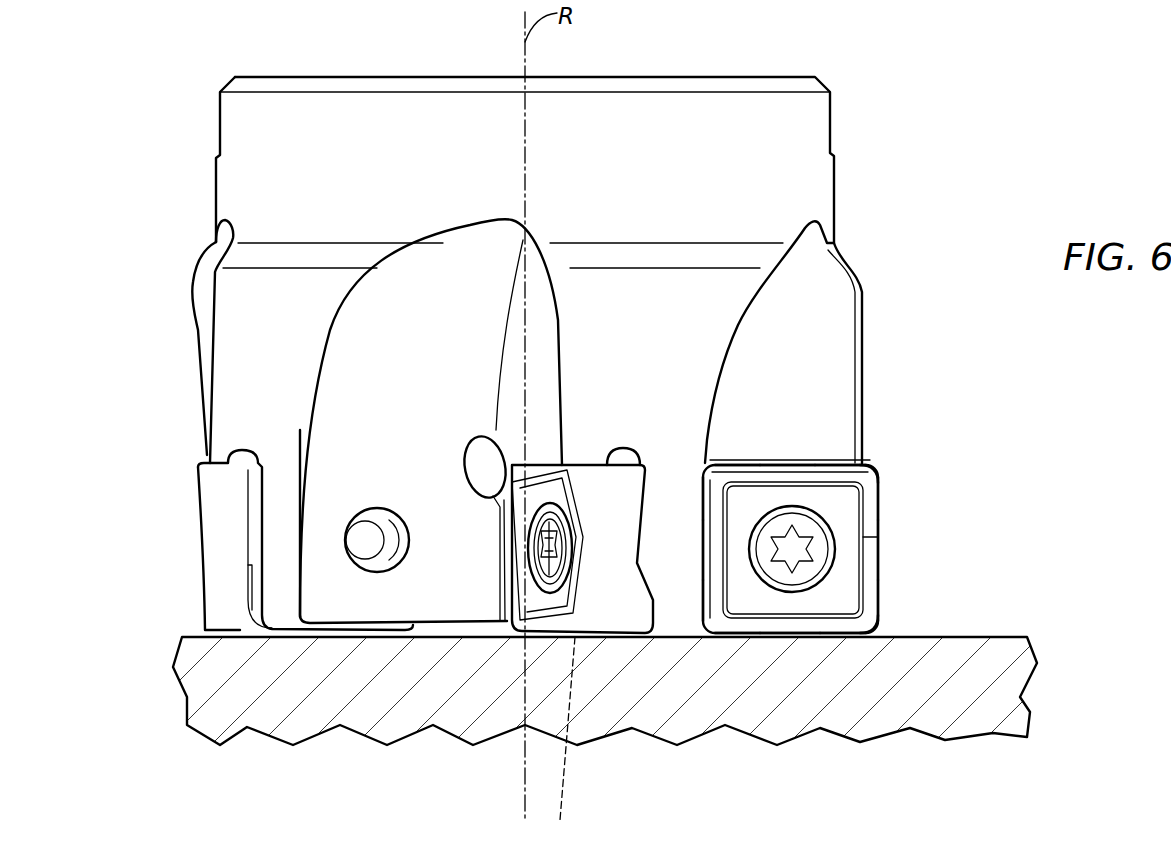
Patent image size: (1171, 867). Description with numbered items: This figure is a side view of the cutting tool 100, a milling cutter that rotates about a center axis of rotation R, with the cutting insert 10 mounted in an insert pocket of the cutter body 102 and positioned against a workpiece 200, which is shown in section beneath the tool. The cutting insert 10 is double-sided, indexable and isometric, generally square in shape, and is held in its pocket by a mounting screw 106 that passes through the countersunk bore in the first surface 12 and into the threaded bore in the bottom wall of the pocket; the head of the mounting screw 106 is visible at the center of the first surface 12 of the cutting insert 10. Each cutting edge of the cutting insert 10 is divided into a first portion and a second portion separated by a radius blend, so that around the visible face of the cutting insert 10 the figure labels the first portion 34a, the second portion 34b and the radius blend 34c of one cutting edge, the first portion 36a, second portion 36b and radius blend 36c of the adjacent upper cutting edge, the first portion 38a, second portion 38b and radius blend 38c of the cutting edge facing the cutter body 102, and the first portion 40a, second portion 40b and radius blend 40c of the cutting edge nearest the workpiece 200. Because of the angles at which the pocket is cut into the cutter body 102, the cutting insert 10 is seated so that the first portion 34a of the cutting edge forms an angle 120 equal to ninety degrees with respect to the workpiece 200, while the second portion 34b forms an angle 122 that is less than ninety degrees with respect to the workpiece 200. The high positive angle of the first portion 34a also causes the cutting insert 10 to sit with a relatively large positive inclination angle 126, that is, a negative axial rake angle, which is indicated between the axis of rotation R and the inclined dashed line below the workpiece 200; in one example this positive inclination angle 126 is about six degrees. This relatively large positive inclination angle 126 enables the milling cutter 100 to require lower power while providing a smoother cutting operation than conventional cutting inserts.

The cutting tool 100 is at (893, 42).
The cutter body 102 is at (828, 274).
The cutting insert 10 is at (830, 599).
The first surface 12 is at (800, 498).
The mounting screw 106 is at (800, 549).
The first portion of cutting edge 36 36a is at (847, 463).
The second portion of cutting edge 36 36b is at (737, 462).
The radius blend of cutting edge 36 36c is at (782, 466).
The first portion of cutting edge 38 38a is at (703, 497).
The second portion of cutting edge 38 38b is at (703, 612).
The radius blend of cutting edge 38 38c is at (703, 562).
The first portion of cutting edge 34 34a is at (878, 604).
The second portion of cutting edge 34 34b is at (878, 506).
The radius blend of cutting edge 34 34c is at (878, 537).
The first portion of cutting edge 40 40a is at (758, 637).
The second portion of cutting edge 40 40b is at (845, 637).
The radius blend of cutting edge 40 40c is at (805, 637).
The angle 120 is at (940, 634).
The angle 122 is at (1012, 634).
The positive inclination angle 126 is at (622, 782).
The workpiece 200 is at (922, 697).